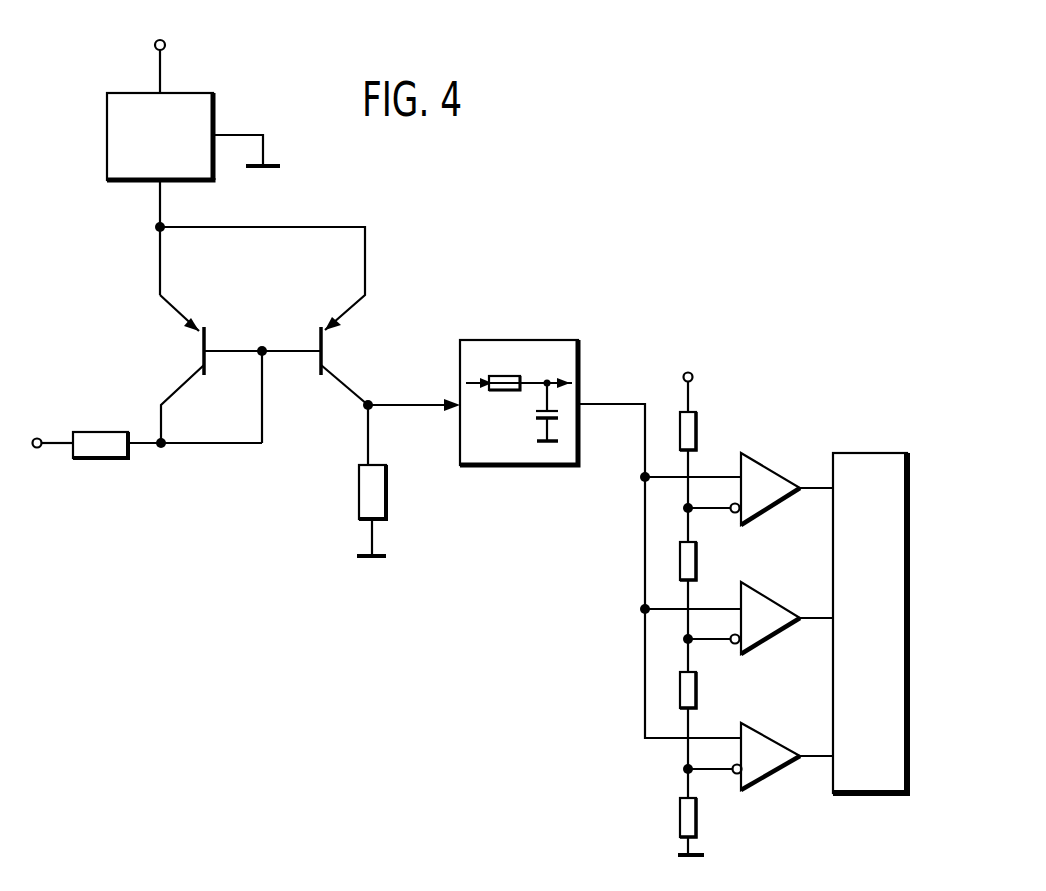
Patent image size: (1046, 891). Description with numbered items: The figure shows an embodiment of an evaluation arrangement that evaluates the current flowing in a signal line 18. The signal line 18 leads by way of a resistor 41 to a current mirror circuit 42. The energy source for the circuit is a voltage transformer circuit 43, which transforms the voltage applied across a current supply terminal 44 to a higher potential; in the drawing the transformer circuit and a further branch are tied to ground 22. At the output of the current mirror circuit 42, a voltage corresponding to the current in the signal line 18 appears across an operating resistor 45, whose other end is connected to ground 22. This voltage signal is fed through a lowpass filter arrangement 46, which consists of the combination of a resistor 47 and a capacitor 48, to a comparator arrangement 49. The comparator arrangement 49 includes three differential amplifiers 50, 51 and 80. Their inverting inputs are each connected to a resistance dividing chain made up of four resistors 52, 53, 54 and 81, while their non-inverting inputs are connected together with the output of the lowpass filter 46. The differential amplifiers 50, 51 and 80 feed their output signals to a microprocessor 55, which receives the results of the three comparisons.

The signal line 18 is at (55, 441).
The ground 22 is at (360, 553).
The resistor 41 is at (98, 458).
The current mirror circuit 42 is at (261, 311).
The voltage transformer circuit 43 is at (107, 120).
The current supply terminal 44 is at (156, 41).
The operating resistor 45 is at (364, 492).
The lowpass filter arrangement 46 is at (519, 402).
The resistor 47 is at (495, 376).
The capacitor 48 is at (540, 415).
The comparator arrangement 49 is at (736, 615).
The differential amplifier 50 is at (752, 475).
The differential amplifier 51 is at (764, 600).
The resistor 52 is at (699, 425).
The resistor 53 is at (699, 550).
The resistor 54 is at (699, 686).
The microprocessor 55 is at (858, 462).
The differential amplifier 80 is at (770, 745).
The resistor 81 is at (699, 818).